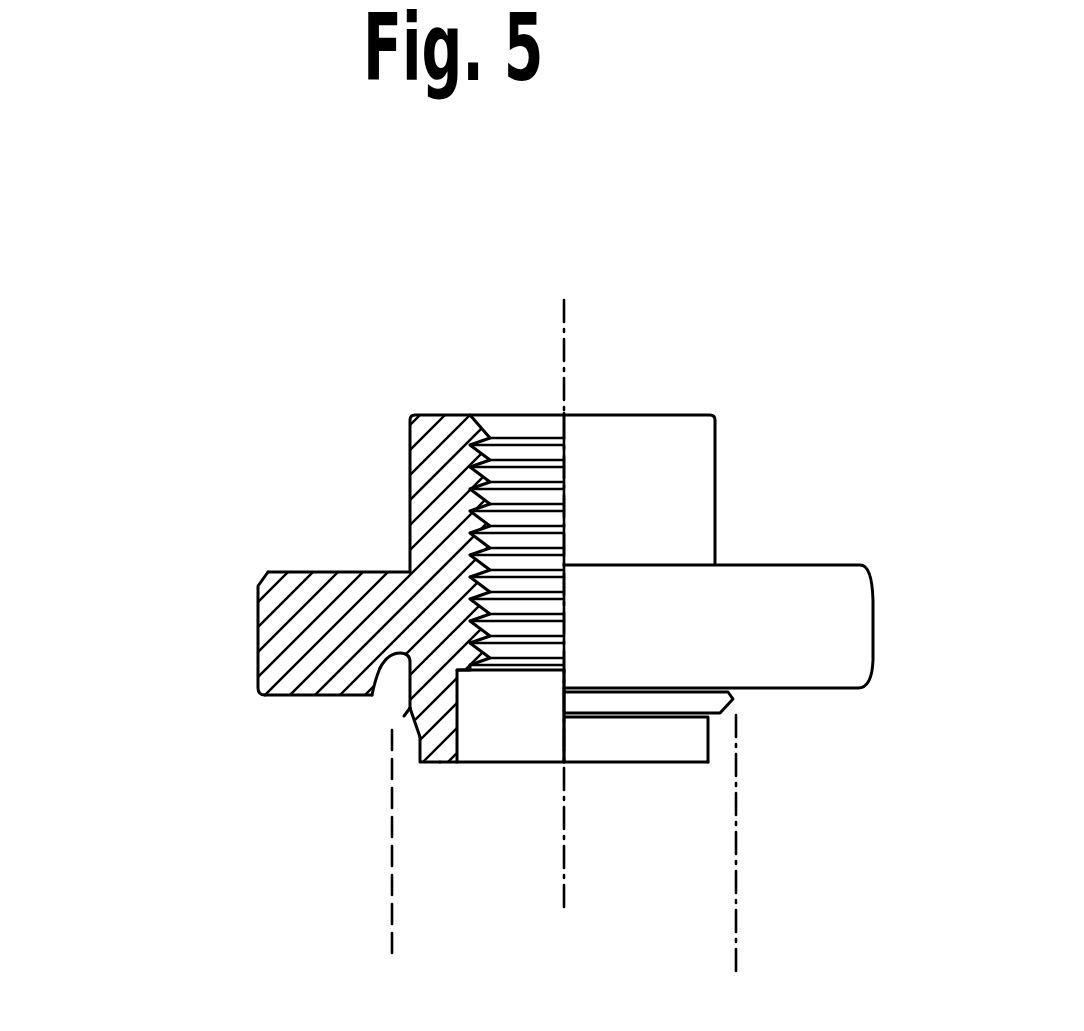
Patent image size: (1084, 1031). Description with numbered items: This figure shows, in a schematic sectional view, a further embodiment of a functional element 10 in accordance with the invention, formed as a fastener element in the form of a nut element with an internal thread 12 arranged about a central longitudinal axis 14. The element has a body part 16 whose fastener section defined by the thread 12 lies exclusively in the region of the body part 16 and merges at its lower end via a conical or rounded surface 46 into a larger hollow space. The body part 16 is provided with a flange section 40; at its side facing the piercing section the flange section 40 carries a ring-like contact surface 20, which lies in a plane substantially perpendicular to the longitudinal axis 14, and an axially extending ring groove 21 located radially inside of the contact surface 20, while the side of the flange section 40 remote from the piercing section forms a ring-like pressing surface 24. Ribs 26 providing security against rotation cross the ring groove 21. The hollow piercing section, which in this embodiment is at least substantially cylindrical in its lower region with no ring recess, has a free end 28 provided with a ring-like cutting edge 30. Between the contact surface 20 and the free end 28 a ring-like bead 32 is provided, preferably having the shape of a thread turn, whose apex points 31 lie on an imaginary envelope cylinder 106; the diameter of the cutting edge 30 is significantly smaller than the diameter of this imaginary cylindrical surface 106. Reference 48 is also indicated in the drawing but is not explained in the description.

The functional element 10 is at (722, 473).
The internal thread 12 is at (520, 478).
The longitudinal axis 14 is at (563, 333).
The body part 16 is at (423, 462).
The ring-like contact surface 20 is at (295, 705).
The ring groove 21 is at (375, 661).
The ring-like pressing surface 24 is at (337, 568).
The ribs 26 is at (378, 680).
The free end 28 is at (438, 768).
The ring-like cutting edge 30 is at (421, 760).
The apex points 31 is at (387, 715).
The ring-like bead 32 is at (403, 727).
The flange section 40 is at (266, 635).
The conical or rounded surface 46 is at (467, 678).
The sleeve 48 is at (520, 706).
The imaginary envelope cylinder 106 is at (742, 908).